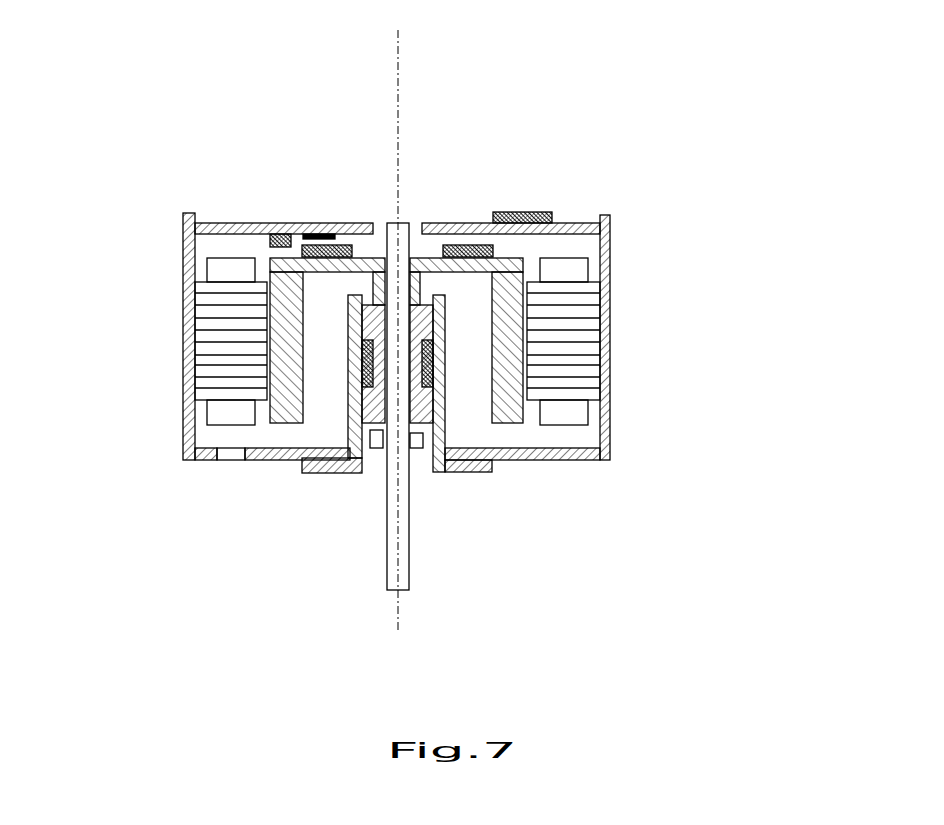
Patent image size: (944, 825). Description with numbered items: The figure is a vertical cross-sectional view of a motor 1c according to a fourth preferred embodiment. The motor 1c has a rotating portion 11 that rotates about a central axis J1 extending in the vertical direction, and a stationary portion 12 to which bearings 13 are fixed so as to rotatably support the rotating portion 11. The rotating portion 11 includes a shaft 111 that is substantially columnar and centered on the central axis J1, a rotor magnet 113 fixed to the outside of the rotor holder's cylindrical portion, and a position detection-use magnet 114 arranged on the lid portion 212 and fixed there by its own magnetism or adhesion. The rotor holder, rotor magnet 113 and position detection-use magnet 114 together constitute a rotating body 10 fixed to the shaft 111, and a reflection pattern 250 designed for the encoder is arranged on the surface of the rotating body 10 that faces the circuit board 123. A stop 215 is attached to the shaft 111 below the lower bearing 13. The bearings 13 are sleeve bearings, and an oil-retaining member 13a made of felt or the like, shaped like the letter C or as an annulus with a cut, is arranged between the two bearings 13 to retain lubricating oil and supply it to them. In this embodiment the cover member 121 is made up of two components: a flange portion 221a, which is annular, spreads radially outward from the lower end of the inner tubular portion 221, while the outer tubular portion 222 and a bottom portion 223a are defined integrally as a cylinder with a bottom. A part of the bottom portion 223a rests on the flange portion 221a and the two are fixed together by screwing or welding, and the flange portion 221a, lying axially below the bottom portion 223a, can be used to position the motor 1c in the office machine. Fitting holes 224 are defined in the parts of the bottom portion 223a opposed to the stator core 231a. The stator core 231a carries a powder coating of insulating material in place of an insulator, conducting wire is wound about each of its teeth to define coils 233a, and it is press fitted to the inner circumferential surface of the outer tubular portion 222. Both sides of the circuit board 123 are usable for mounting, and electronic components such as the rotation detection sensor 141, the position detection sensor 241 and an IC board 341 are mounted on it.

The motor 1c is at (148, 75).
The rotating body 10 is at (303, 222).
The rotating portion 11 is at (312, 425).
The shaft 111 is at (390, 543).
The rotor magnet 113 is at (527, 250).
The position detection-use magnet 114 is at (317, 222).
The stationary portion 12 is at (677, 330).
The cover member 121 is at (168, 473).
The circuit board 123 is at (580, 222).
The bearing 13 is at (437, 222).
The oil-retaining member 13a is at (362, 372).
The rotation detection sensor 141 is at (328, 222).
The lid portion 212 is at (248, 222).
The stop 215 is at (420, 450).
The inner tubular portion 221 is at (447, 407).
The flange portion 221a is at (487, 472).
The outer tubular portion 222 is at (615, 417).
The bottom portion 223a is at (603, 462).
The fitting hole 224 is at (230, 462).
The stator core 231a is at (593, 372).
The coil 233a is at (575, 270).
The position detection sensor 241 is at (273, 222).
The reflection pattern 250 is at (482, 222).
The IC board 341 is at (547, 212).
The central axis J1 is at (397, 213).